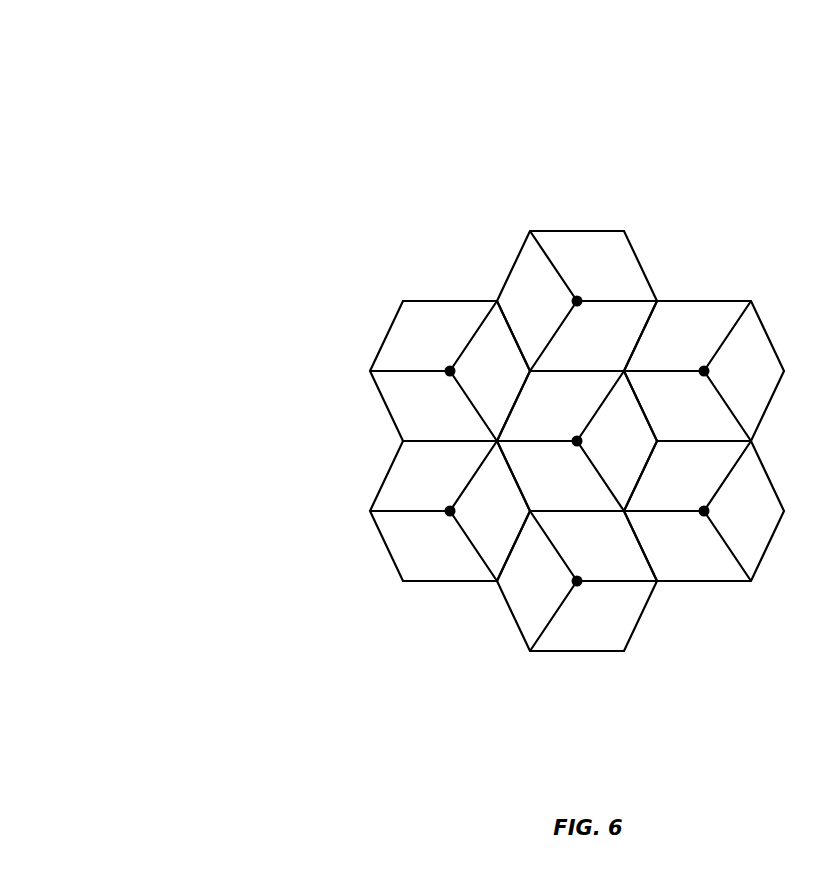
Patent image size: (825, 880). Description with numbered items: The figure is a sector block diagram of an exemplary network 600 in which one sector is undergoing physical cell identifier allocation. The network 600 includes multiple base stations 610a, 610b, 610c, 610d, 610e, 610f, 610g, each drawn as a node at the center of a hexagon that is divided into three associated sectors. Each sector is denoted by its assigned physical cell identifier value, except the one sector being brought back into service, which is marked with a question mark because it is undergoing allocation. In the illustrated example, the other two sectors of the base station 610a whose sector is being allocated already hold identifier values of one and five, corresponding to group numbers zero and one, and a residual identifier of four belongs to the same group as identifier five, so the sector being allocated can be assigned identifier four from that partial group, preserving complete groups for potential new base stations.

The network 600 is at (134, 84).
The base station 610a is at (577, 441).
The base station 610b is at (577, 301).
The base station 610c is at (704, 371).
The base station 610d is at (704, 511).
The base station 610e is at (577, 581).
The base station 610f is at (450, 511).
The base station 610g is at (450, 371).